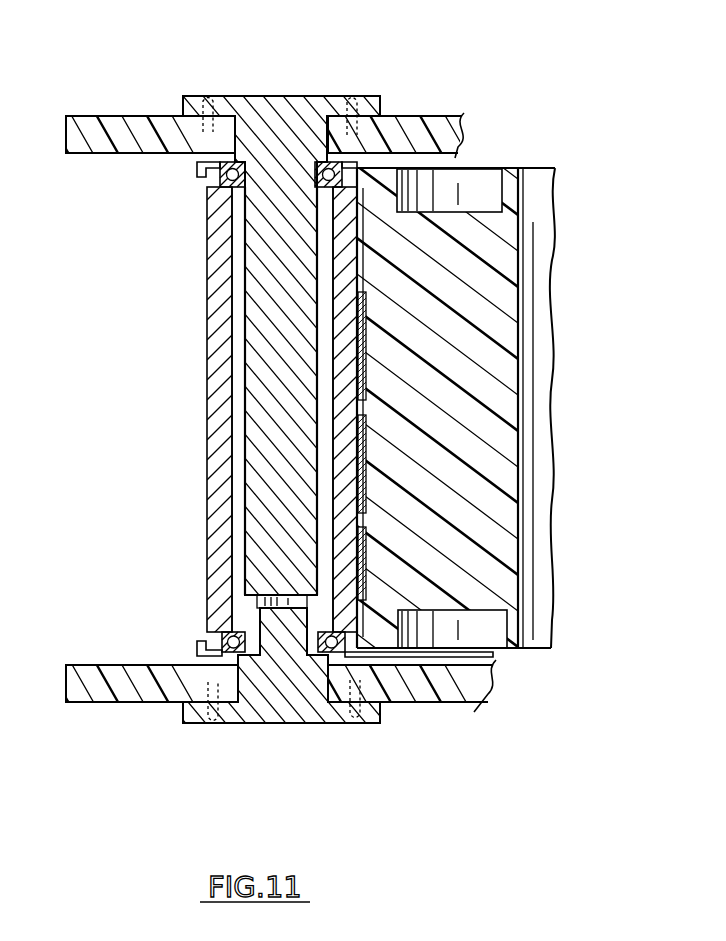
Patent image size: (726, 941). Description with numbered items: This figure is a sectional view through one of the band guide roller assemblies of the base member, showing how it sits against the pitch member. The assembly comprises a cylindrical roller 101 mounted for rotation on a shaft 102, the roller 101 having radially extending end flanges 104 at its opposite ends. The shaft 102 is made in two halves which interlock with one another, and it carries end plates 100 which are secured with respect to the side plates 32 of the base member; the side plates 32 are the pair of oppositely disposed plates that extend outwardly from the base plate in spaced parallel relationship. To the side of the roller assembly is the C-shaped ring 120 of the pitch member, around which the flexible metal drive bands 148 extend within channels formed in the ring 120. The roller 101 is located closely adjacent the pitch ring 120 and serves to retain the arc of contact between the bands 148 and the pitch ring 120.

The side plate 32 is at (110, 130).
The end plate 100 is at (287, 105).
The cylindrical roller 101 is at (217, 448).
The shaft 102 is at (268, 311).
The end flange 104 is at (205, 172).
The C-shaped ring 120 is at (508, 263).
The flexible metal drive band 148 is at (366, 438).